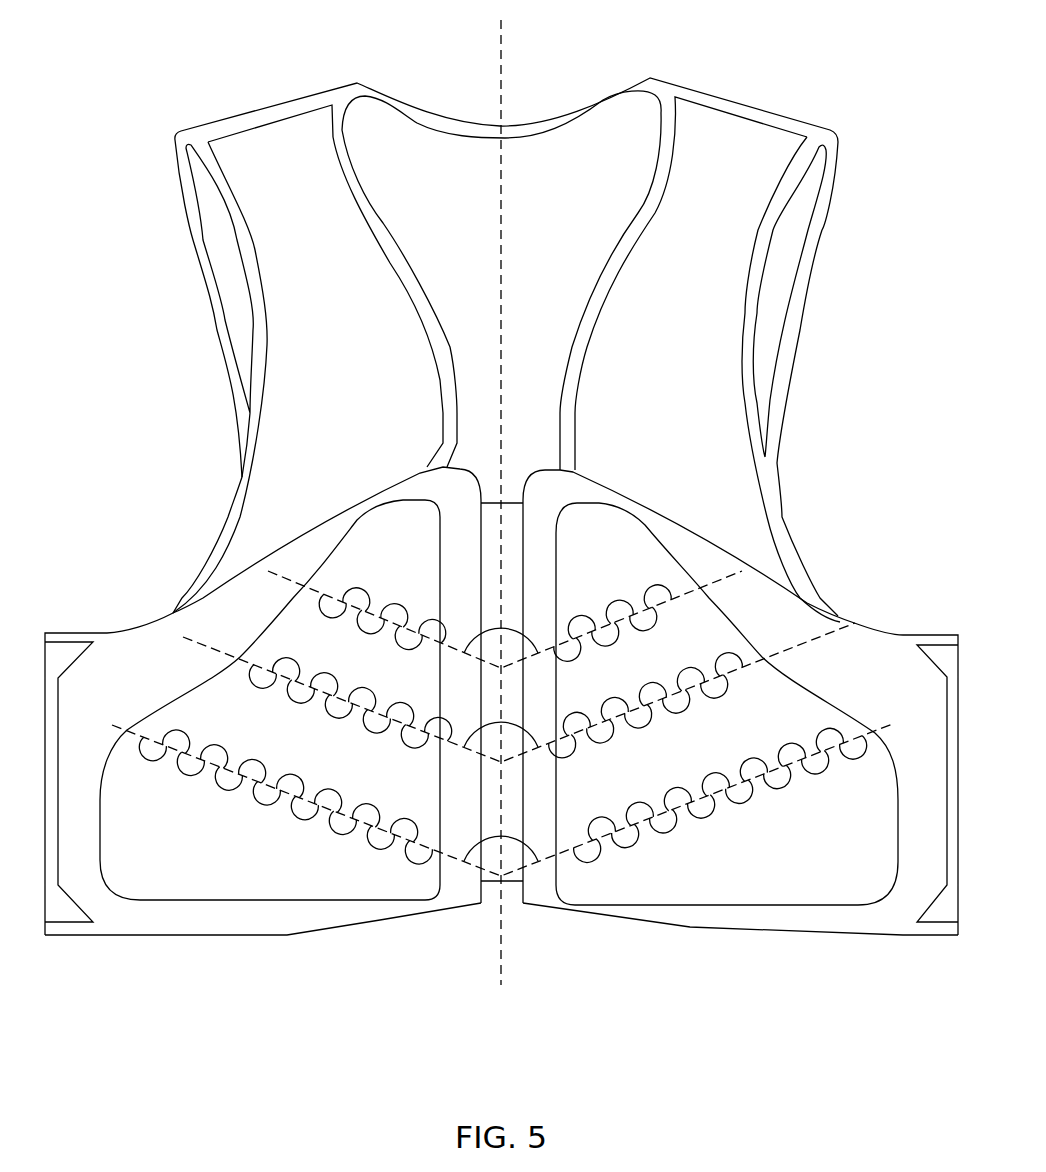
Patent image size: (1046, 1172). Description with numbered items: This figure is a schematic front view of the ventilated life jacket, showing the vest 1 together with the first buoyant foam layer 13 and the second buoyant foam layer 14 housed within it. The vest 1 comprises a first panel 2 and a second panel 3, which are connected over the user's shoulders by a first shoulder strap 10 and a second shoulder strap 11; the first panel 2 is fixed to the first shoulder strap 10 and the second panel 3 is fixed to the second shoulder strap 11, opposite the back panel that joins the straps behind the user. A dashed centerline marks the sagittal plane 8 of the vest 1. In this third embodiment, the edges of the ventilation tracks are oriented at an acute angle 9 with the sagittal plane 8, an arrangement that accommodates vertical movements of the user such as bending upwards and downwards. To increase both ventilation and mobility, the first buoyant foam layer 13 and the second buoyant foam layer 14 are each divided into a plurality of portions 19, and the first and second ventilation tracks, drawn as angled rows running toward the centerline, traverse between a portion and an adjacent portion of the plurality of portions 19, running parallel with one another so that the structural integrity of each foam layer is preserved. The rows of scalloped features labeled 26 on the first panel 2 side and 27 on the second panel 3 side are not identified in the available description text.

The vest 1 is at (157, 163).
The first panel 2 is at (412, 471).
The second panel 3 is at (592, 471).
The sagittal plane 8 is at (500, 68).
The acute angle 9 is at (462, 612).
The first shoulder strap 10 is at (282, 128).
The second shoulder strap 11 is at (772, 145).
The first buoyant foam layer 13 is at (163, 697).
The second buoyant foam layer 14 is at (837, 697).
The plurality of portions 19 is at (338, 557).
The left scalloped fastener rows 26 is at (345, 598).
The right scalloped fastener rows 27 is at (660, 598).